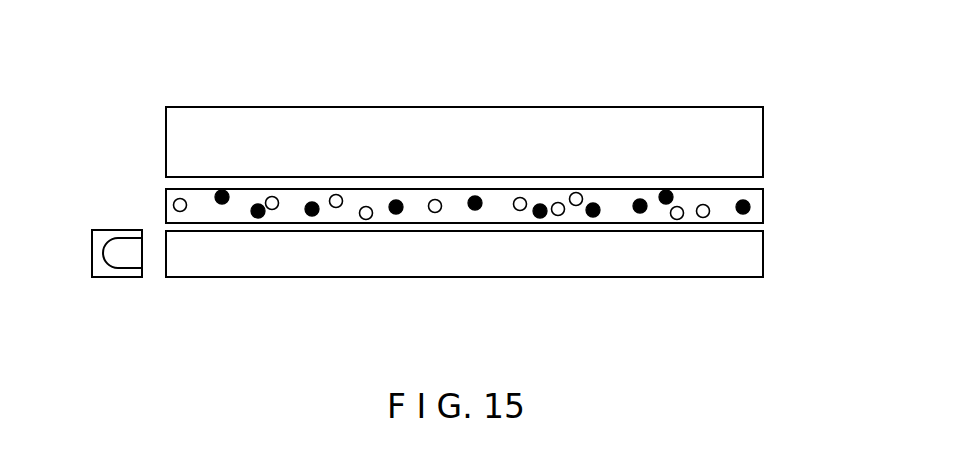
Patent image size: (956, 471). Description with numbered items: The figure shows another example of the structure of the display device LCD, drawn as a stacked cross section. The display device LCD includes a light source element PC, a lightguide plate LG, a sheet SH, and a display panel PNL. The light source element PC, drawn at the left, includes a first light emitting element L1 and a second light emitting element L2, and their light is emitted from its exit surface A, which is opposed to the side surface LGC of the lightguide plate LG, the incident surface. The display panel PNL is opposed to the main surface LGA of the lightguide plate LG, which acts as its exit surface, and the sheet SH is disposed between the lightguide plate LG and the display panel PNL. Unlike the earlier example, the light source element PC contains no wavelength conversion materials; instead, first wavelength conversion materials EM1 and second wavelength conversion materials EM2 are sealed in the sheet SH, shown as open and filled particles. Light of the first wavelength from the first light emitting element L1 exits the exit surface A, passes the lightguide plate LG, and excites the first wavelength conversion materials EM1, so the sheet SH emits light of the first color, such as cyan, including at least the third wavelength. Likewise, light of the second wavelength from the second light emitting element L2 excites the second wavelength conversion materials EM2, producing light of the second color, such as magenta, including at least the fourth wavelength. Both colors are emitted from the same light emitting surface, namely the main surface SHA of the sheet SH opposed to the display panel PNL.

The display device LCD is at (560, 86).
The display panel PNL is at (755, 147).
The sheet SH is at (757, 207).
The lightguide plate LG is at (750, 258).
The light source element PC is at (100, 240).
The first light emitting element L1 is at (135, 291).
The second light emitting element L2 is at (130, 255).
The exit surface A is at (150, 232).
The first wavelength conversion materials EM1 is at (180, 190).
The second wavelength conversion materials EM2 is at (225, 190).
The main surface SHA is at (521, 182).
The main surface LGA is at (571, 218).
The side surface LGC is at (160, 257).